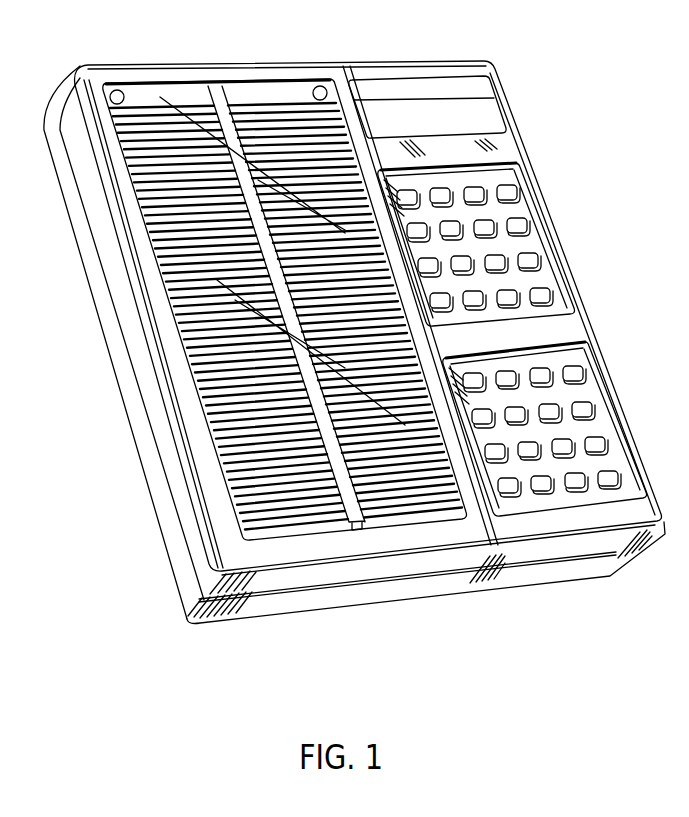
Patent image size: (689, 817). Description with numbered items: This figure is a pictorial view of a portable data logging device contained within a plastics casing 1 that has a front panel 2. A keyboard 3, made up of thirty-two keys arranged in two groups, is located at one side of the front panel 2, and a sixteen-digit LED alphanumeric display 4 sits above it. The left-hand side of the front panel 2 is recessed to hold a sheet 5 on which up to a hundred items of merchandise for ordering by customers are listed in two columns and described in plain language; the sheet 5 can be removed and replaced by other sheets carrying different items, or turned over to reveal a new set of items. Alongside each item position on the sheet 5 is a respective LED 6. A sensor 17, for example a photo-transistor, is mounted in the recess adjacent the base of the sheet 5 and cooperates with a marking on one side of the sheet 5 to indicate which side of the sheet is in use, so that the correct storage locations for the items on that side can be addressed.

The plastics casing 1 is at (266, 63).
The front panel 2 is at (512, 142).
The keyboard 3 is at (531, 242).
The LED alphanumeric display 4 is at (492, 108).
The sheet 5 is at (147, 90).
The LED 6 is at (341, 106).
The sensor 17 is at (359, 532).